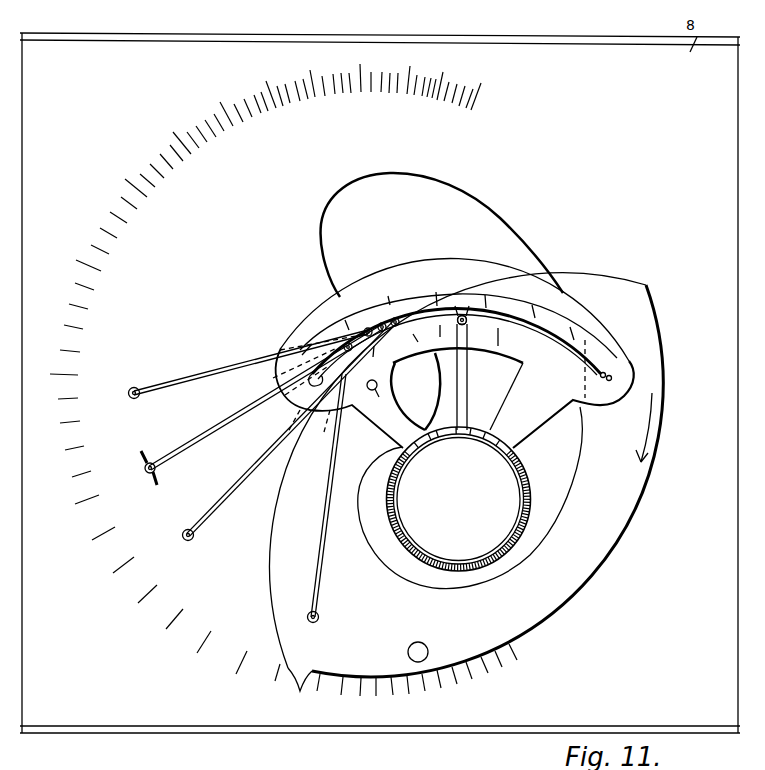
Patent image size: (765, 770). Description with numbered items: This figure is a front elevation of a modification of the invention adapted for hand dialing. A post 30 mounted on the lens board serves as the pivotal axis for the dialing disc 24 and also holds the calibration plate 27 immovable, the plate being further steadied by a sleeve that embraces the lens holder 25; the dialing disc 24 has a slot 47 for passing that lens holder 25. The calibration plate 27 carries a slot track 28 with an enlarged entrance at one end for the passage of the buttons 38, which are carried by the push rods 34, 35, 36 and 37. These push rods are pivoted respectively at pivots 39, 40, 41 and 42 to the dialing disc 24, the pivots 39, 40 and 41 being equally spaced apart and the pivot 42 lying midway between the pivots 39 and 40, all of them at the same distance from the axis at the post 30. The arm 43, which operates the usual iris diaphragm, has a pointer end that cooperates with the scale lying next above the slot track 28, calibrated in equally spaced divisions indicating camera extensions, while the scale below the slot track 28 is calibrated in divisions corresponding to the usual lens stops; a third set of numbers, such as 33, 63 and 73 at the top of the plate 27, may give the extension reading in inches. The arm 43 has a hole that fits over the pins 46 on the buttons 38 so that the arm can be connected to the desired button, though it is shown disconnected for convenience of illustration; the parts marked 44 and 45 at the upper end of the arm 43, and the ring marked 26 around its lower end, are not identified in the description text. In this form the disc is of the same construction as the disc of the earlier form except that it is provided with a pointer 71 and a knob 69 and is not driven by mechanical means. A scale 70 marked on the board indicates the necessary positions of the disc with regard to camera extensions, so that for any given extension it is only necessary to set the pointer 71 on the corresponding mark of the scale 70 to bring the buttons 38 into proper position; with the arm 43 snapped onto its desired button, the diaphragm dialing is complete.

The dialing disc 24 is at (612, 262).
The lens holder 25 is at (522, 540).
The toothed ring 26 is at (496, 524).
The calibration plate 27 is at (607, 397).
The slot track 28 is at (545, 337).
The post 30 is at (381, 397).
The third-set extension scale number 33 is at (461, 281).
The push rod 34 is at (208, 374).
The push rod 35 is at (240, 480).
The push rod 36 is at (322, 567).
The push rod 37 is at (212, 440).
The button 38 is at (366, 327).
The pivot 39 is at (152, 462).
The pivot 40 is at (140, 396).
The pivot 41 is at (192, 539).
The pivot 42 is at (319, 617).
The arm 43 is at (467, 380).
The fork at pointer pivot 44 is at (467, 305).
The pointer pivot 45 is at (458, 315).
The pin 46 is at (395, 317).
The slot 47 is at (514, 242).
The third-set extension scale number 63 is at (586, 311).
The knob 69 is at (428, 646).
The scale 70 is at (530, 652).
The pointer 71 is at (308, 671).
The third-set extension scale number 73 is at (620, 365).